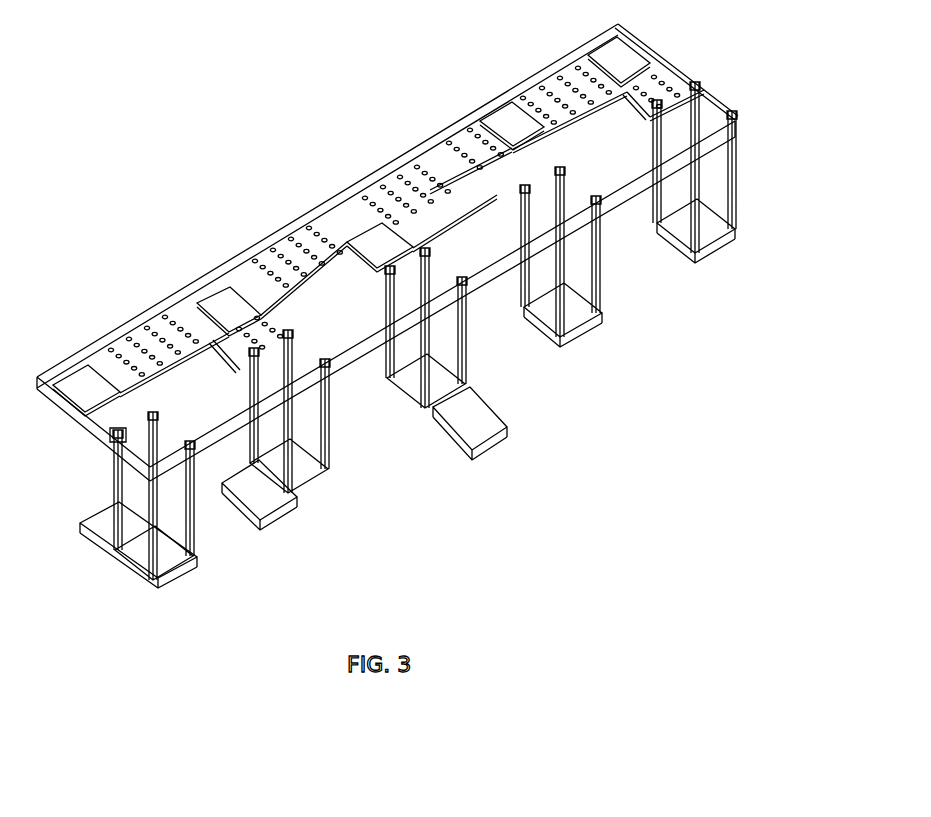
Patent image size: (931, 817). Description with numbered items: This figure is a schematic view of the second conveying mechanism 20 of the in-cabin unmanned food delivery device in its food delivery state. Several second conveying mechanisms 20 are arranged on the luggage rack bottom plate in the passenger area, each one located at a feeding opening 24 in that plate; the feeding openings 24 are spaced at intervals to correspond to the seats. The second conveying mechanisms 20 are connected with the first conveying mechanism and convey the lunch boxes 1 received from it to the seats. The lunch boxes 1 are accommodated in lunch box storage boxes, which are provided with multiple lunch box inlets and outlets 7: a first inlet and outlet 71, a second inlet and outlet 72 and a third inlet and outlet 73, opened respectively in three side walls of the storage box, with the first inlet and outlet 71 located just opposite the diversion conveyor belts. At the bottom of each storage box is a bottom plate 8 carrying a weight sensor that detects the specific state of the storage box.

The lunch box 1 is at (215, 308).
The second conveying mechanism 20 is at (672, 214).
The feeding opening 24 is at (140, 443).
The lunch box inlet and outlet 7 is at (720, 240).
The first inlet and outlet 71 is at (113, 541).
The second inlet and outlet 72 is at (300, 490).
The third inlet and outlet 73 is at (475, 394).
The bottom plate 8 is at (264, 520).